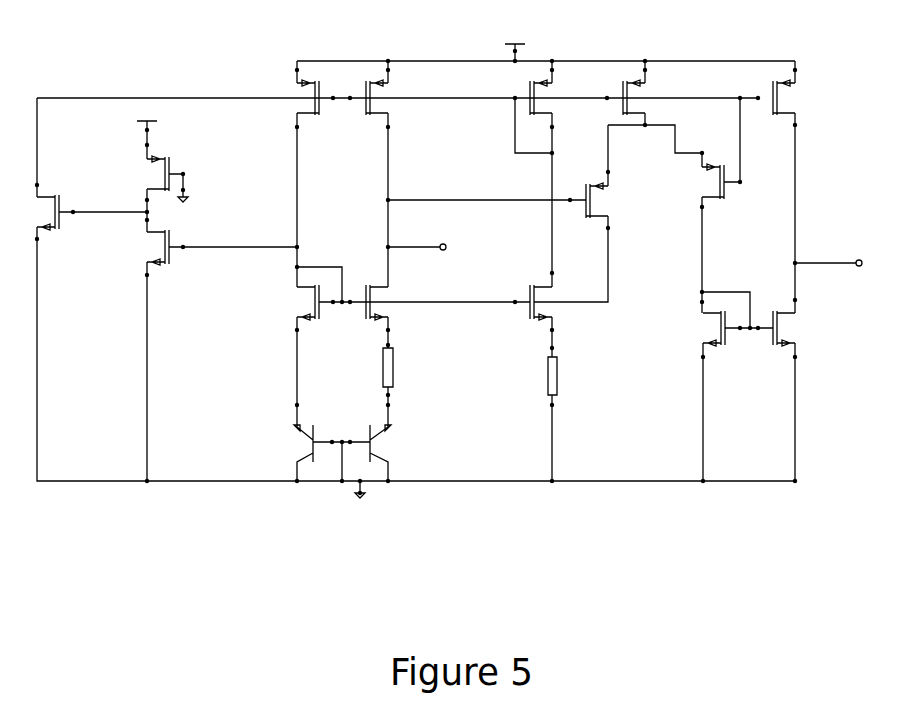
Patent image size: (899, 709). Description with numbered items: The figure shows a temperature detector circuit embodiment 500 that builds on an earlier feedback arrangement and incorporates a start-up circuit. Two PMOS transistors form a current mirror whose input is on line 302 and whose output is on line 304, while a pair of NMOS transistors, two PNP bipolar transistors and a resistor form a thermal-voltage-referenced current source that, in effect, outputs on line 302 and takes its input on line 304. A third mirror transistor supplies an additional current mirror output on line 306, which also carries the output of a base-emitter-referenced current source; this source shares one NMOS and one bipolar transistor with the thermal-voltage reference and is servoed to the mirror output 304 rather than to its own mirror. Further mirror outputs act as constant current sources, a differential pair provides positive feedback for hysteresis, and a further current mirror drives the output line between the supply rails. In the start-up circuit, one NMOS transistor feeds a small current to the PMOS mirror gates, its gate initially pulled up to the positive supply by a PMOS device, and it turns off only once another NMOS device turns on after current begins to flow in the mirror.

The temperature detector circuit embodiment 500 is at (436, 330).
The current mirror input line 302 is at (388, 188).
The current mirror output line 304 is at (297, 188).
The additional current mirror output line 306 is at (552, 188).